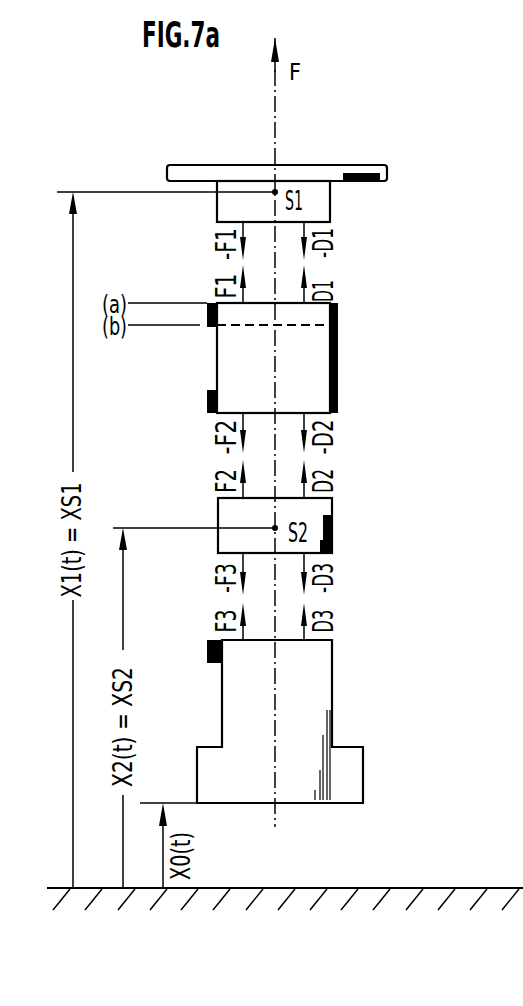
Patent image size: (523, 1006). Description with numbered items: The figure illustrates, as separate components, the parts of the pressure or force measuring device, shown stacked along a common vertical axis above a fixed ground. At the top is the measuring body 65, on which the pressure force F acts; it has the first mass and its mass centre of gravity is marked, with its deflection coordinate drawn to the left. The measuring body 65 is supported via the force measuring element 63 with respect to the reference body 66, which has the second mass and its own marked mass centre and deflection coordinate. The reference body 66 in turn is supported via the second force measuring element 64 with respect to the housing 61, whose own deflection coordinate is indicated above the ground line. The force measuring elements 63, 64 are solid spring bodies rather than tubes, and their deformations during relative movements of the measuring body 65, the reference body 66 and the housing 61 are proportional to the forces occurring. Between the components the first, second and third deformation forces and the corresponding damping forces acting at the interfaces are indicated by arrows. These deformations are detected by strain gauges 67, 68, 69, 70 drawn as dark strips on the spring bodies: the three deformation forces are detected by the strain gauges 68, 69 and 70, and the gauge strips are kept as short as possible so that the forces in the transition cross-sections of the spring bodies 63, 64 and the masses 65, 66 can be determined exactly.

The housing 61 is at (152, 803).
The force measuring element 63 is at (317, 348).
The second force measuring element 64 is at (323, 692).
The measuring body 65 is at (232, 170).
The reference body 66 is at (330, 505).
The strain gauge 67 is at (338, 385).
The strain gauge 68 is at (208, 316).
The strain gauge 69 is at (207, 400).
The strain gauge 70 is at (207, 652).